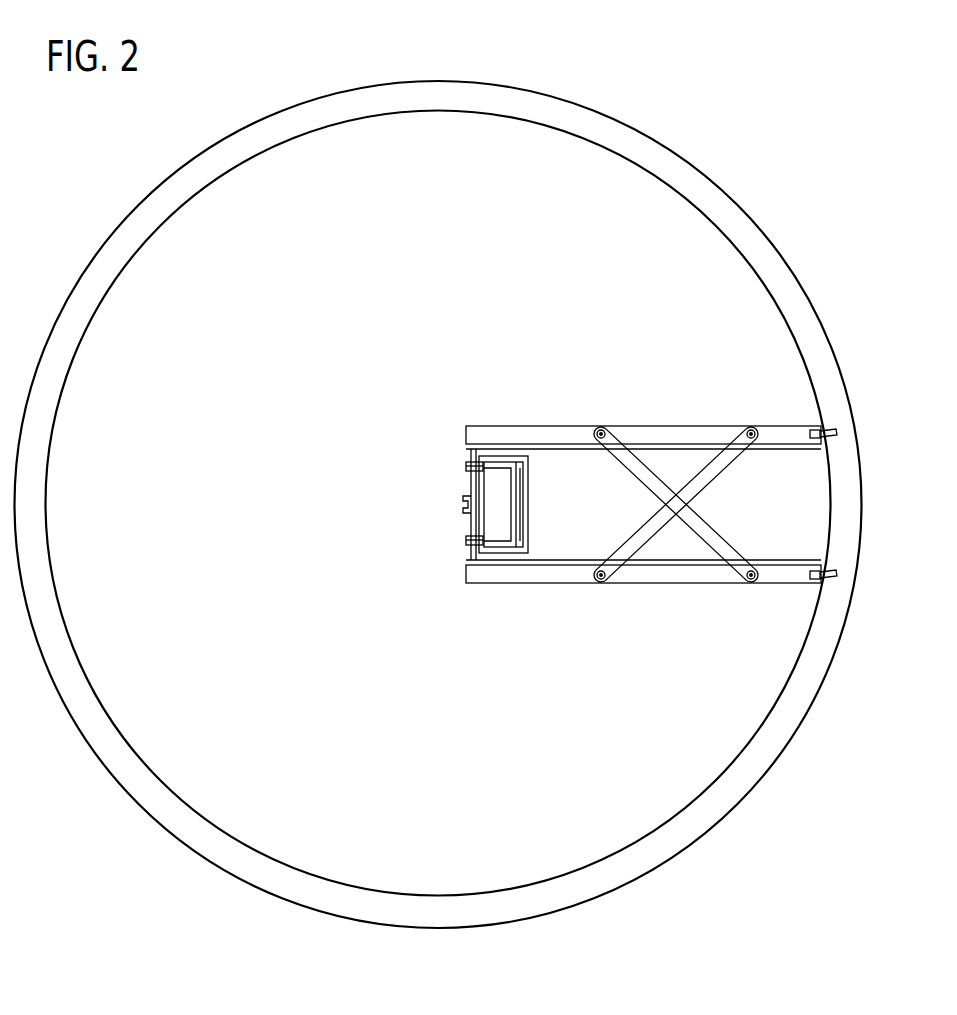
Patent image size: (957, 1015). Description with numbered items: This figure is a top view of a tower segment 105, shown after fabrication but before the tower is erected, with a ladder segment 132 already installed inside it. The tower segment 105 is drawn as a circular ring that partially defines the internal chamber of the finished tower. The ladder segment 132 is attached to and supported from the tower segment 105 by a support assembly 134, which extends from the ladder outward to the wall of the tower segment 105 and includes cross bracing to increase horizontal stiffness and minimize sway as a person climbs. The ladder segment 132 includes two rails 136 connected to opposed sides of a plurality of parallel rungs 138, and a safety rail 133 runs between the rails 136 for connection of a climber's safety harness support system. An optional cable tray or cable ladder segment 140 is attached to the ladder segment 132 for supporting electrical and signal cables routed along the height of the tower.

The tower segment 105 is at (771, 238).
The support assembly 134 is at (663, 426).
The ladder segment 132 is at (472, 499).
The safety rail 133 is at (466, 507).
The rails 136 is at (468, 469).
The rungs 138 is at (474, 523).
The cable tray or cable ladder segment 140 is at (532, 506).